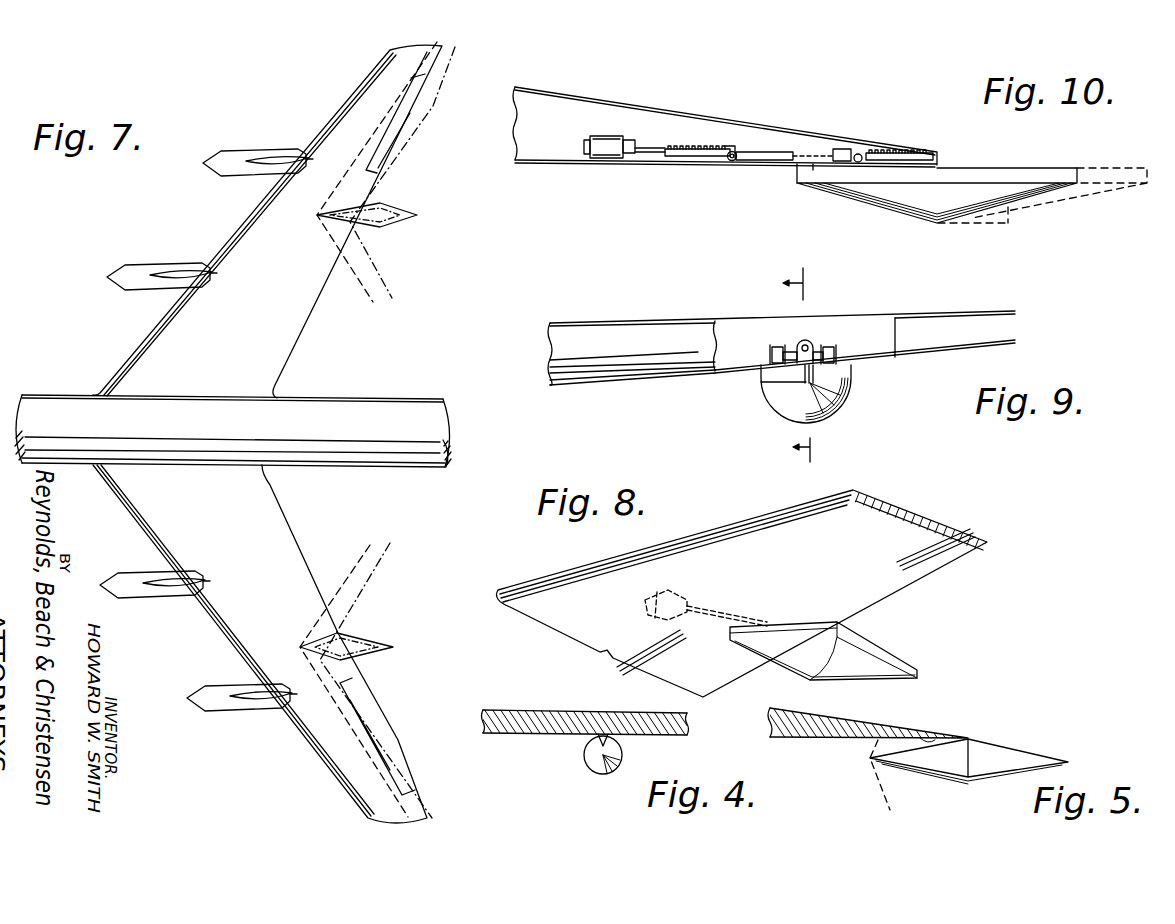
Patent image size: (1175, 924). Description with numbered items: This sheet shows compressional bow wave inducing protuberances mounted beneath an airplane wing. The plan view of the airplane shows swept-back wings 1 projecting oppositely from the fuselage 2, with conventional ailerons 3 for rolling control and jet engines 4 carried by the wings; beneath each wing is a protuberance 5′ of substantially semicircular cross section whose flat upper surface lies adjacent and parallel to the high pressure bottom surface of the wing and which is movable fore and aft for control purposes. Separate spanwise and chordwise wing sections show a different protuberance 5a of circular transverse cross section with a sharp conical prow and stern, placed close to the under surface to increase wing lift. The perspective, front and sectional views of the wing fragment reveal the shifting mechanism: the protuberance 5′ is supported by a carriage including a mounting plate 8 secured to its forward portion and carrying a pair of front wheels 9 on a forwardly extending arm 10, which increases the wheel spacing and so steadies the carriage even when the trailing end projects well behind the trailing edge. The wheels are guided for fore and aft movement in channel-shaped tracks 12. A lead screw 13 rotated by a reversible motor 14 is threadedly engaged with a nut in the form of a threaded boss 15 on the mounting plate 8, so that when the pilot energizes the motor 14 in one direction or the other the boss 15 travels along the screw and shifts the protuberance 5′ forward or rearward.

In FIG. 7, the swept-back wing 1 is at (183, 323).
In FIG. 10, the swept-back wing 1 is at (612, 98).
In FIG. 9, the swept-back wing 1 is at (680, 327).
In FIG. 8, the swept-back wing 1 is at (750, 522).
In FIG. 4, the swept-back wing 1 is at (558, 712).
In FIG. 5, the swept-back wing 1 is at (813, 731).
In FIG. 7, the fuselage 2 is at (316, 410).
In FIG. 7, the aileron 3 is at (415, 97).
In FIG. 7, the jet engine 4 is at (226, 174).
In FIG. 7, the protuberance 5′ is at (372, 202).
In FIG. 10, the protuberance 5′ is at (952, 210).
In FIG. 9, the protuberance 5′ is at (850, 392).
In FIG. 8, the protuberance 5′ is at (850, 653).
In FIG. 4, the protuberance 5a is at (590, 760).
In FIG. 5, the protuberance 5a is at (957, 760).
In FIG. 10, the mounting plate 8 is at (813, 166).
In FIG. 10, the front wheels 9 is at (736, 152).
In FIG. 9, the front wheels 9 is at (772, 353).
In FIG. 10, the forwardly extending arm 10 is at (758, 160).
In FIG. 9, the forwardly extending arm 10 is at (809, 365).
In FIG. 10, the channel-shaped track 12 is at (730, 146).
In FIG. 9, the channel-shaped track 12 is at (778, 347).
In FIG. 10, the lead screw 13 is at (664, 149).
In FIG. 9, the lead screw 13 is at (798, 346).
In FIG. 8, the lead screw 13 is at (710, 608).
In FIG. 10, the motor 14 is at (607, 140).
In FIG. 8, the motor 14 is at (667, 588).
In FIG. 10, the threaded boss 15 is at (850, 150).